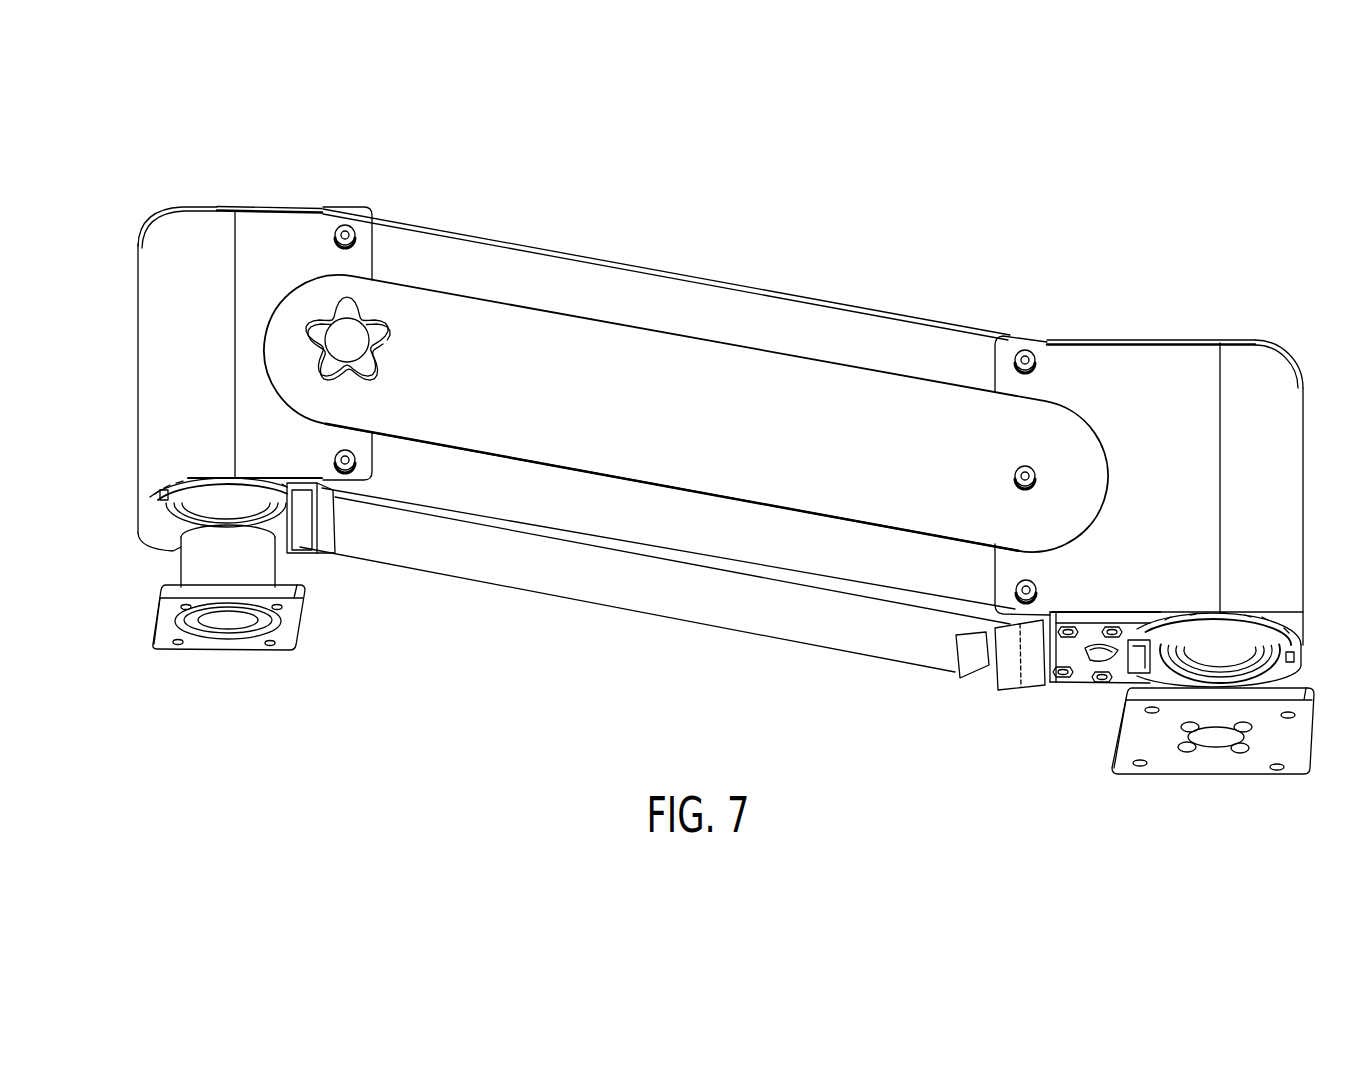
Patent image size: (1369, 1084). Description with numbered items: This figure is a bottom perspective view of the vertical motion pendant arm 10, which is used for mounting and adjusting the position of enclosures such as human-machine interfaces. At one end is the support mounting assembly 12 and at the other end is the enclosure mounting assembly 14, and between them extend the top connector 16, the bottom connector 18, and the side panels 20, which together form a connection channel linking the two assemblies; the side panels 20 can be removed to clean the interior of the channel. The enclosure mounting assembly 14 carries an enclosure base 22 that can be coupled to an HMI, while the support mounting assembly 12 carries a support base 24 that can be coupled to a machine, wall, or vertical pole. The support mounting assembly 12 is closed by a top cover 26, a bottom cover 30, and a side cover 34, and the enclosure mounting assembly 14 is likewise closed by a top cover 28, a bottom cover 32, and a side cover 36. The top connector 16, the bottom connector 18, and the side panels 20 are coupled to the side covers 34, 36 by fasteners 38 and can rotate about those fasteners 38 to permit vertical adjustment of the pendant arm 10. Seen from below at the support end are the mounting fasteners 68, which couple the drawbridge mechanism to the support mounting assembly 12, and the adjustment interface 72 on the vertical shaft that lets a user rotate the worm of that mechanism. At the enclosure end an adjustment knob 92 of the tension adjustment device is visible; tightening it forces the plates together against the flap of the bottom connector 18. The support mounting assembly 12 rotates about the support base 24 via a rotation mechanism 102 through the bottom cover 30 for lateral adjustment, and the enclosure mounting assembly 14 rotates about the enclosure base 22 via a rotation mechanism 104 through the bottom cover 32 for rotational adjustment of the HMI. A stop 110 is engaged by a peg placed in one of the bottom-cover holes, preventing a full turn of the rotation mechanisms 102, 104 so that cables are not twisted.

The vertical motion pendant arm 10 is at (697, 234).
The support mounting assembly 12 is at (1160, 304).
The enclosure mounting assembly 14 is at (148, 200).
The top connector 16 is at (727, 312).
The bottom connector 18 is at (725, 600).
The side panels 20 is at (683, 374).
The enclosure base 22 is at (168, 624).
The support base 24 is at (1290, 737).
The top cover 26 is at (1255, 347).
The top cover 28 is at (262, 206).
The bottom cover 30 is at (1290, 632).
The bottom cover 32 is at (142, 505).
The side cover 34 is at (1287, 428).
The side cover 36 is at (152, 435).
The fasteners 38 is at (348, 228).
The mounting fasteners 68 is at (1063, 680).
The adjustment interface 72 is at (1128, 640).
The adjustment knob 92 is at (354, 326).
The rotation mechanism 102 is at (1223, 653).
The rotation mechanism 104 is at (233, 517).
The stop 110 is at (300, 540).